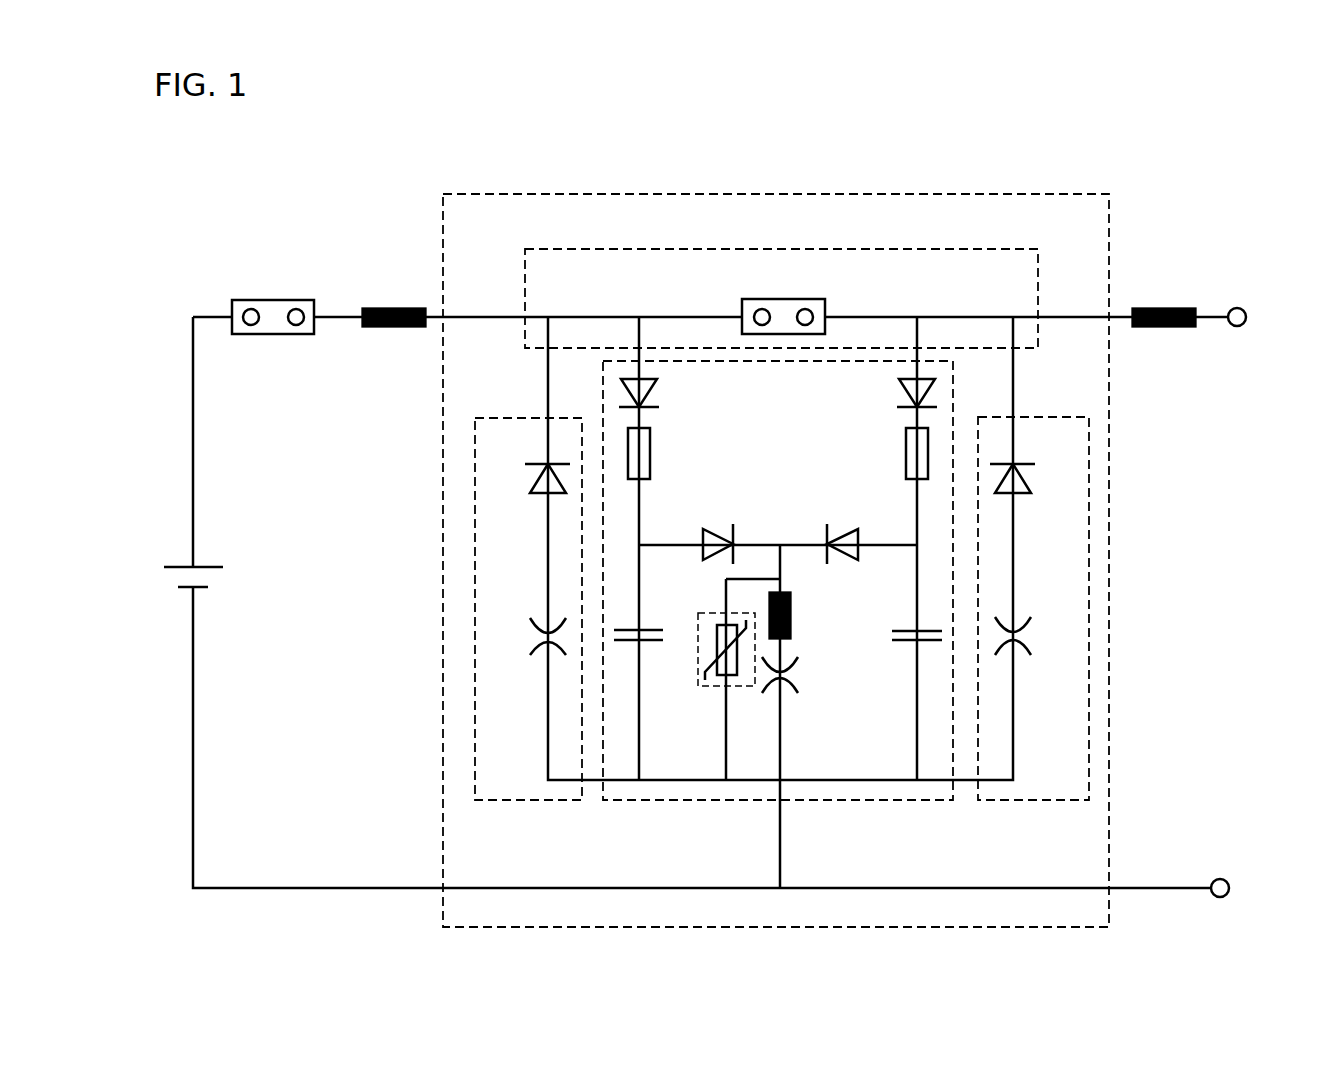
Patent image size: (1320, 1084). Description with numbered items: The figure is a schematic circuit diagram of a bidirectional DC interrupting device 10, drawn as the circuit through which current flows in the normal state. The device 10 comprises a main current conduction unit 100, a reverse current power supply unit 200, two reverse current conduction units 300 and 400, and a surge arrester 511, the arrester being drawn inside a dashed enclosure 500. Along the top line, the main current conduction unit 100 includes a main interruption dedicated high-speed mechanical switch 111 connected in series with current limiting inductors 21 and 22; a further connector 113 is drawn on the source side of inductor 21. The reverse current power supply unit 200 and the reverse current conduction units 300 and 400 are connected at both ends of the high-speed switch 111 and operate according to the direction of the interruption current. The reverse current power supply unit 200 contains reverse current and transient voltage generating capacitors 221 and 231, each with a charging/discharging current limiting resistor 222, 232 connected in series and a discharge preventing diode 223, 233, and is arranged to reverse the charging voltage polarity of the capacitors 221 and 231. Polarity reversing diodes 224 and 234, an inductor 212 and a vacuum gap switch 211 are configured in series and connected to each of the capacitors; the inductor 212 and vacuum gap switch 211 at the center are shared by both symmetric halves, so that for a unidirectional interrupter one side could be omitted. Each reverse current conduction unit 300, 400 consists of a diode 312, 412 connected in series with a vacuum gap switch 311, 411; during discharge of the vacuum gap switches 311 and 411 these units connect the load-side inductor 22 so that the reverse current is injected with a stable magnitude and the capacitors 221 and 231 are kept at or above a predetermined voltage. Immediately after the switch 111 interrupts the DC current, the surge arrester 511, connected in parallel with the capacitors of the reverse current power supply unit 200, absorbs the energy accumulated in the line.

The DC interrupting device 10 is at (783, 193).
The main current conduction unit 100 is at (783, 248).
The main interruption dedicated high-speed mechanical switch 111 is at (785, 299).
The terminal connector 113 is at (275, 300).
The current limiting inductor 21 is at (395, 328).
The current limiting inductor 22 is at (1165, 328).
The reverse current power supply unit 200 is at (822, 800).
The vacuum gap switch 211 is at (797, 683).
The inductor 212 is at (793, 618).
The reverse current and transient voltage generating capacitor 221 is at (647, 628).
The charging/discharging current limiting resistor 222 is at (651, 452).
The discharge preventing diode 223 is at (657, 396).
The polarity reversing diode 224 is at (720, 532).
The reverse current and transient voltage generating capacitor 231 is at (908, 641).
The charging/discharging current limiting resistor 232 is at (905, 450).
The discharge preventing diode 233 is at (900, 393).
The polarity reversing diode 234 is at (850, 532).
The reverse current conduction unit 300 is at (1005, 800).
The vacuum gap switch 311 is at (1030, 645).
The diode 312 is at (1021, 494).
The reverse current conduction unit 400 is at (540, 418).
The vacuum gap switch 411 is at (535, 645).
The diode 412 is at (541, 494).
The varistor module 500 is at (720, 688).
The surge arrester 511 is at (713, 647).